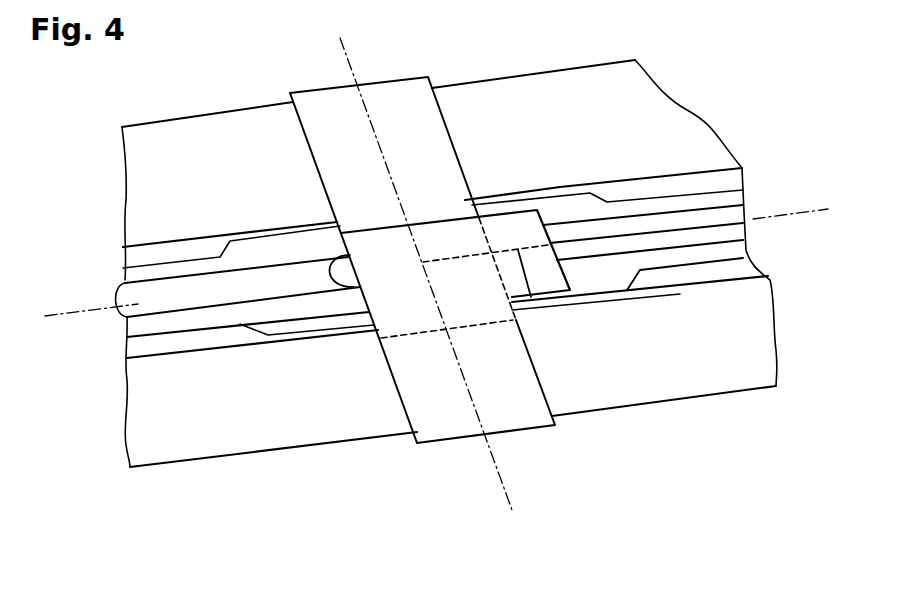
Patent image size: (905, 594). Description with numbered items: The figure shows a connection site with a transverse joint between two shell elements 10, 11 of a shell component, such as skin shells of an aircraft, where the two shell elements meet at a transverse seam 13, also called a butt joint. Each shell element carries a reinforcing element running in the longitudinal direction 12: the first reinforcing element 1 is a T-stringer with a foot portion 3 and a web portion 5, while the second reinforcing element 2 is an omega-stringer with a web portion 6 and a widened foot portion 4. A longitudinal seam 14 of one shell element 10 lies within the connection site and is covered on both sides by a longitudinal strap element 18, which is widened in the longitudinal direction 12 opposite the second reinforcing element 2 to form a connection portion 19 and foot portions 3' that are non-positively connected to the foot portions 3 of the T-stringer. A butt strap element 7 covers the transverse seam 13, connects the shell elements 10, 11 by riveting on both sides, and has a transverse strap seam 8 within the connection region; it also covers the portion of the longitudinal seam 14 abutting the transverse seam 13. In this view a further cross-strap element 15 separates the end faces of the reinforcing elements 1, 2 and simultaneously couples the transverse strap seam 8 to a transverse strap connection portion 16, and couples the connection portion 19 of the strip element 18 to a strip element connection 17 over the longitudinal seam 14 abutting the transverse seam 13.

The first reinforcing element 1 is at (653, 213).
The second reinforcing element 2 is at (220, 257).
The foot portion 3 is at (646, 358).
The foot portions 3' is at (643, 241).
The foot portion 4 is at (305, 242).
The web portion 5 is at (597, 230).
The web portion 6 is at (307, 286).
The strap element 7 is at (423, 130).
The transverse strap seam 8 is at (433, 332).
The shell element 10 is at (733, 388).
The shell element 11 is at (230, 114).
The longitudinal direction 12 is at (57, 318).
The transverse seam 13 is at (340, 38).
The longitudinal seam 14 is at (530, 305).
The cross-strap element 15 is at (520, 380).
The transverse strap connection portion 16 is at (407, 257).
The strip element connection 17 is at (507, 237).
The strap element 18 is at (697, 192).
The connection portion 19 is at (563, 210).